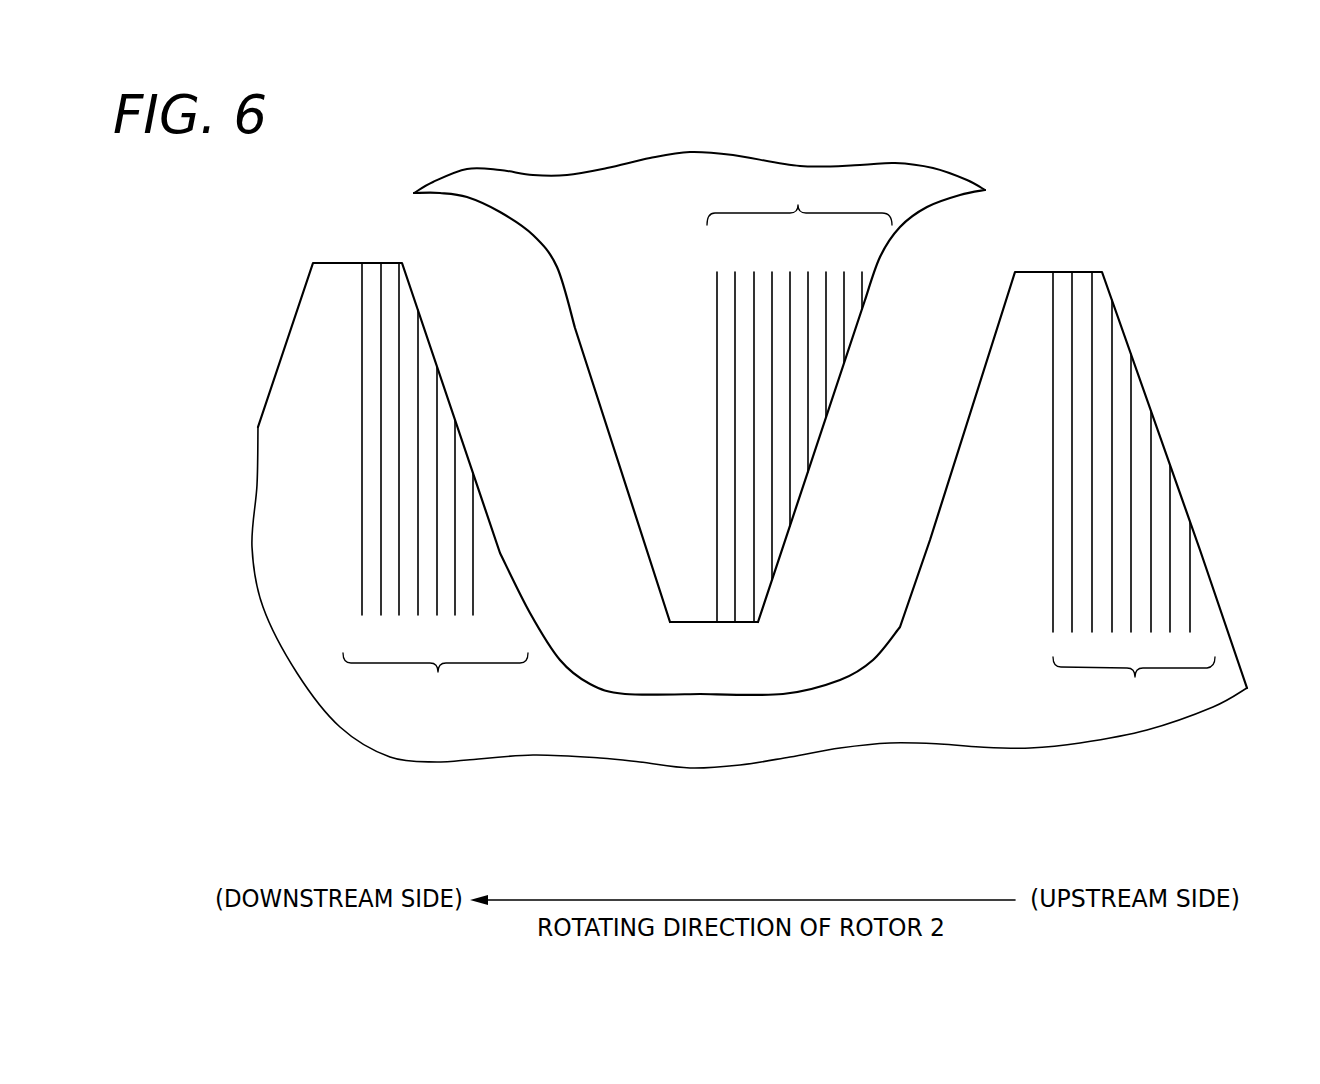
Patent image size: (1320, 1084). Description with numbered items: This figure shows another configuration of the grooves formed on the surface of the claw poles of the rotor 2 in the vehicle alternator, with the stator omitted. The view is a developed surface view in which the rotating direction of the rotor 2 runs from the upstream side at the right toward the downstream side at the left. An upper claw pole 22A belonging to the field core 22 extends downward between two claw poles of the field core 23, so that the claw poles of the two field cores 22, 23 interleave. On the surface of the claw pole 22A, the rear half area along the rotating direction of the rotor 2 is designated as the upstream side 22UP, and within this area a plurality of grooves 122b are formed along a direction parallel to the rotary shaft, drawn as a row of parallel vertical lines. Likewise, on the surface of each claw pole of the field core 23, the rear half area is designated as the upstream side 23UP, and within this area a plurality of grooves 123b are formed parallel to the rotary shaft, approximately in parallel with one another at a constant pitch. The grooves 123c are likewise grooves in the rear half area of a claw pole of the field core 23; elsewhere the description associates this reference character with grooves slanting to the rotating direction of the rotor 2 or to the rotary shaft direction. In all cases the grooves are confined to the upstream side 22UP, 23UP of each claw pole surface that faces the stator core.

The rotor 2 is at (887, 133).
The field core 22 is at (550, 200).
The upstream side 22UP is at (797, 197).
The claw pole 22A is at (690, 608).
The grooves 122b is at (753, 550).
The field core 23 is at (718, 744).
The upstream side 23UP is at (438, 674).
The grooves 123c is at (460, 513).
The grooves 123b is at (1132, 458).